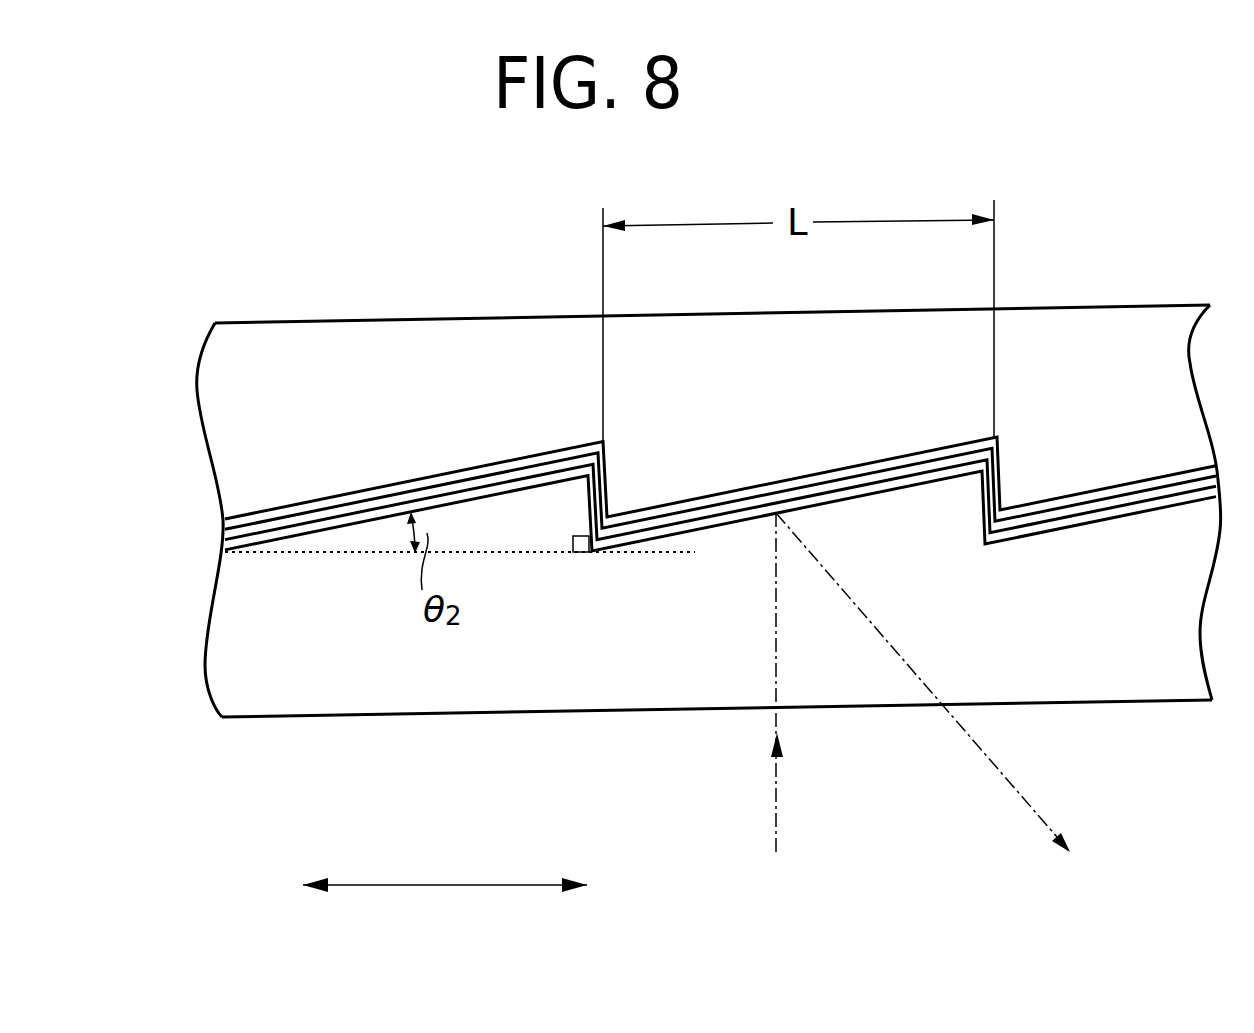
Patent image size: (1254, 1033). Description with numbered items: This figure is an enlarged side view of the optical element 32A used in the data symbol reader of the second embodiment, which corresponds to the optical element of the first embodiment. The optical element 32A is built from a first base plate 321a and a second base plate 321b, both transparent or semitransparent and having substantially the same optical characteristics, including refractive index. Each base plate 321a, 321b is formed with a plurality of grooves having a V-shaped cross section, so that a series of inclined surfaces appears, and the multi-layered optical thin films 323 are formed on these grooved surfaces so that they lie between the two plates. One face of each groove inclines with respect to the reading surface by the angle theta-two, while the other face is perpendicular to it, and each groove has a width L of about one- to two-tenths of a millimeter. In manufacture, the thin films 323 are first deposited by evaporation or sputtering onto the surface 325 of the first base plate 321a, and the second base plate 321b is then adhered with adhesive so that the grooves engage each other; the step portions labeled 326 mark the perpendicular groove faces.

The optical element 32A is at (1050, 205).
The first base plate 321a is at (1078, 358).
The second base plate 321b is at (1062, 647).
The multi-layered optical thin films 323 is at (383, 505).
The surface 325 is at (300, 510).
The step portion 326 is at (608, 478).